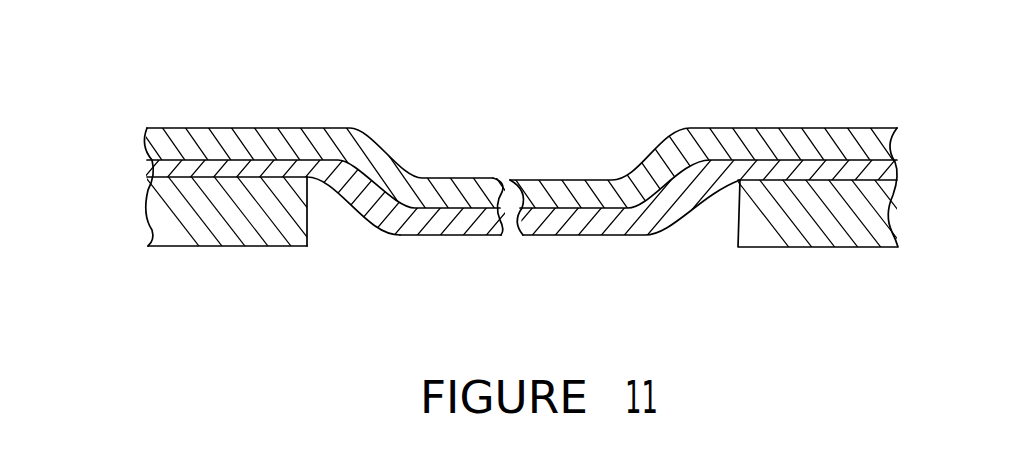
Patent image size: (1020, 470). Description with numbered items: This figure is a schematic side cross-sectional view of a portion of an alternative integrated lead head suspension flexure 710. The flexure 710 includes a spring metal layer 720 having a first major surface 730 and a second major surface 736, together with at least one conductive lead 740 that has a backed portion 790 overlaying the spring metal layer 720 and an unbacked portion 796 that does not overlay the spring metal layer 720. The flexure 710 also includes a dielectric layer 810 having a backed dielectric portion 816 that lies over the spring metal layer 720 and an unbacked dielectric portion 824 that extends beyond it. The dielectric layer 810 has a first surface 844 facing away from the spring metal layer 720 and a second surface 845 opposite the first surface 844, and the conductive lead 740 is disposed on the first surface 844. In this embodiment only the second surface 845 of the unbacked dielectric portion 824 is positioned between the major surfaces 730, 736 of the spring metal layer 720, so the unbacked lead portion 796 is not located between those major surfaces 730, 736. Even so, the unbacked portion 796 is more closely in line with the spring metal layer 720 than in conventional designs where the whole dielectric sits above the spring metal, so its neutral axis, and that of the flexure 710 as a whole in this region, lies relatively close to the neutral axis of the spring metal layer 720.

The flexure 710 is at (197, 107).
The spring metal layer 720 is at (210, 248).
The first major surface 730 is at (211, 178).
The second major surface 736 is at (168, 247).
The conductive lead 740 is at (308, 130).
The backed portion 790 is at (230, 130).
The unbacked portion 796 is at (466, 178).
The dielectric layer 810 is at (148, 172).
The backed dielectric portion 816 is at (285, 182).
The unbacked dielectric portion 824 is at (433, 237).
The first surface 844 is at (419, 210).
The second surface 845 is at (468, 237).